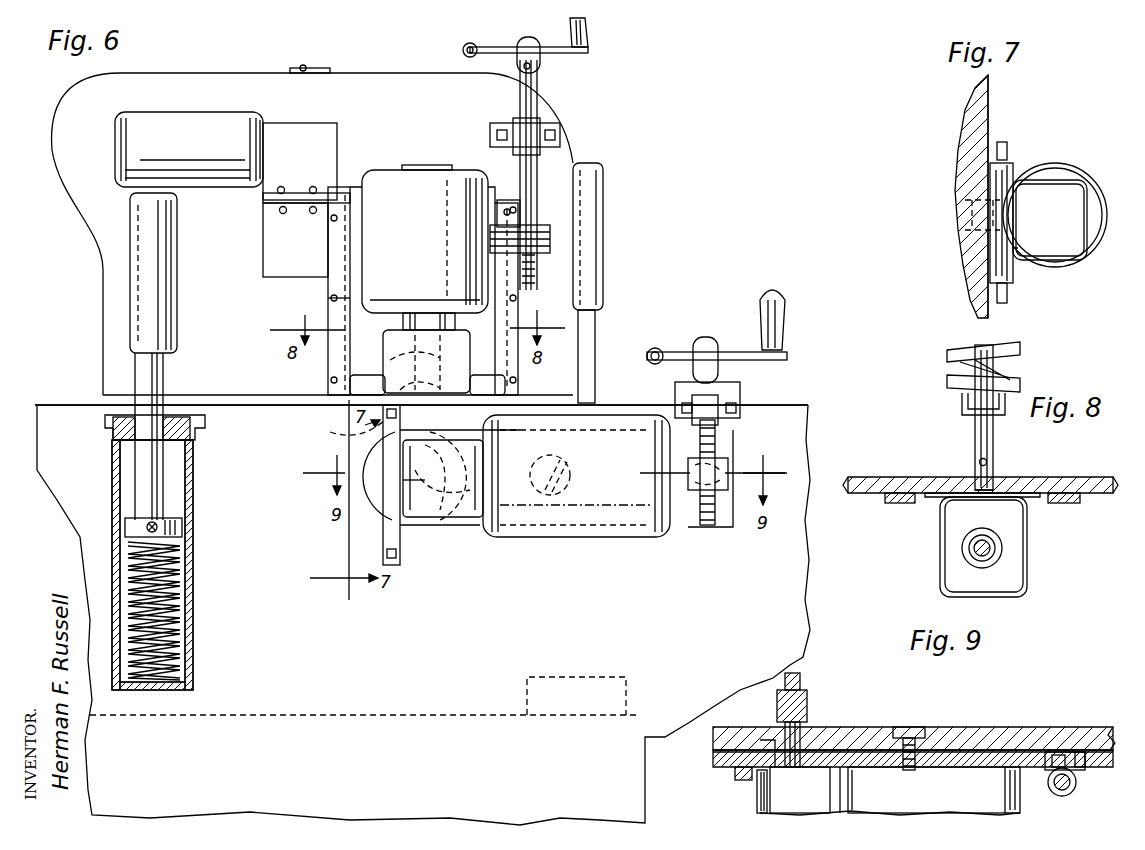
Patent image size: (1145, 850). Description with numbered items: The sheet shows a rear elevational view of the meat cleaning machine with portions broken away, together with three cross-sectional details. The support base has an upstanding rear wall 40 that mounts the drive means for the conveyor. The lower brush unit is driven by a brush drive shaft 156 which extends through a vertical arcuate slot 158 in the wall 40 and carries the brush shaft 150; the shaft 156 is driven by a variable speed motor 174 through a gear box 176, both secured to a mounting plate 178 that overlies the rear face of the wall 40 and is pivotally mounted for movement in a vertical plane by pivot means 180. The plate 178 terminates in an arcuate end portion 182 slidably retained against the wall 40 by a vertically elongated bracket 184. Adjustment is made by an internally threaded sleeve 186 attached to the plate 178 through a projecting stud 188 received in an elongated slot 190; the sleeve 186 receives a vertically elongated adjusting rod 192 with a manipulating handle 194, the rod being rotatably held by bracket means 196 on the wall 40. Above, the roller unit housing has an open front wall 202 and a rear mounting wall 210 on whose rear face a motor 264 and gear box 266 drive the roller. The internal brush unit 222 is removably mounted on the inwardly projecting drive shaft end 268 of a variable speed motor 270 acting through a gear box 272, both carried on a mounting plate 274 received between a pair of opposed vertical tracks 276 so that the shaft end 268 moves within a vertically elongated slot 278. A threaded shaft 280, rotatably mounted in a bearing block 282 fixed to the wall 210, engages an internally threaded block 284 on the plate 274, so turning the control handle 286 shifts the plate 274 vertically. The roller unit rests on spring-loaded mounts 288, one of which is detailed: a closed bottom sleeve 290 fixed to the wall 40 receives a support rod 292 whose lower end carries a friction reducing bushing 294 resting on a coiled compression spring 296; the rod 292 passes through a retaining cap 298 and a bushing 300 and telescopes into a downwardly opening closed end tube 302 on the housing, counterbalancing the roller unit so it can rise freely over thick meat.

In FIG. 6, the rear wall 40 is at (765, 420).
In FIG. 8, the rear wall 40 is at (980, 485).
In FIG. 9, the rear wall 40 is at (975, 740).
In FIG. 9, the shaft 150 is at (800, 680).
In FIG. 9, the brush drive shaft 156 is at (805, 730).
In FIG. 9, the vertical arcuate slot 158 is at (773, 730).
In FIG. 6, the variable speed motor 174 is at (543, 520).
In FIG. 7, the variable speed motor 174 is at (1080, 178).
In FIG. 9, the variable speed motor 174 is at (890, 791).
In FIG. 6, the gear box 176 is at (462, 505).
In FIG. 7, the gear box 176 is at (1055, 235).
In FIG. 9, the gear box 176 is at (757, 793).
In FIG. 6, the mounting plate 178 is at (428, 535).
In FIG. 7, the mounting plate 178 is at (990, 250).
In FIG. 9, the mounting plate 178 is at (865, 752).
In FIG. 7, the pivot means 180 is at (990, 220).
In FIG. 9, the pivot means 180 is at (920, 735).
In FIG. 6, the arcuate end portion 182 is at (380, 453).
In FIG. 9, the arcuate end portion 182 is at (715, 757).
In FIG. 6, the vertically elongated bracket 184 is at (385, 530).
In FIG. 7, the vertically elongated bracket 184 is at (1012, 165).
In FIG. 9, the vertically elongated bracket 184 is at (735, 775).
In FIG. 9, the internally threaded sleeve 186 is at (1075, 792).
In FIG. 9, the projecting stud 188 is at (1060, 752).
In FIG. 9, the elongated slot 190 is at (1086, 762).
In FIG. 6, the adjusting rod 192 is at (710, 520).
In FIG. 9, the adjusting rod 192 is at (1058, 795).
In FIG. 6, the manipulating handle 194 is at (740, 353).
In FIG. 6, the bracket means 196 is at (695, 410).
In FIG. 6, the open front wall 202 is at (600, 275).
In FIG. 6, the rear mounting wall 210 is at (325, 78).
In FIG. 6, the brush unit 222 is at (330, 432).
In FIG. 8, the brush unit 222 is at (940, 383).
In FIG. 6, the motor 264 is at (232, 128).
In FIG. 6, the gear box 266 is at (292, 143).
In FIG. 8, the drive shaft end 268 is at (975, 465).
In FIG. 6, the variable speed motor 270 is at (430, 195).
In FIG. 6, the gear box 272 is at (452, 340).
In FIG. 8, the gear box 272 is at (960, 577).
In FIG. 6, the mounting plate 274 is at (368, 352).
In FIG. 8, the mounting plate 274 is at (1035, 497).
In FIG. 6, the vertical tracks 276 is at (335, 298).
In FIG. 8, the vertical tracks 276 is at (892, 498).
In FIG. 6, the vertically elongated slot 278 is at (405, 330).
In FIG. 8, the vertically elongated slot 278 is at (992, 495).
In FIG. 6, the threaded shaft 280 is at (535, 180).
In FIG. 6, the bearing block 282 is at (540, 137).
In FIG. 6, the internally threaded block 284 is at (553, 240).
In FIG. 6, the control handle 286 is at (582, 32).
In FIG. 6, the spring-loaded mount 288 is at (612, 338).
In FIG. 6, the sleeve 290 is at (190, 615).
In FIG. 6, the support rod 292 is at (150, 378).
In FIG. 6, the friction reducing bushing 294 is at (178, 522).
In FIG. 6, the coiled compression spring 296 is at (175, 590).
In FIG. 6, the retaining cap 298 is at (115, 420).
In FIG. 6, the bushing 300 is at (120, 435).
In FIG. 6, the closed end tube 302 is at (130, 270).